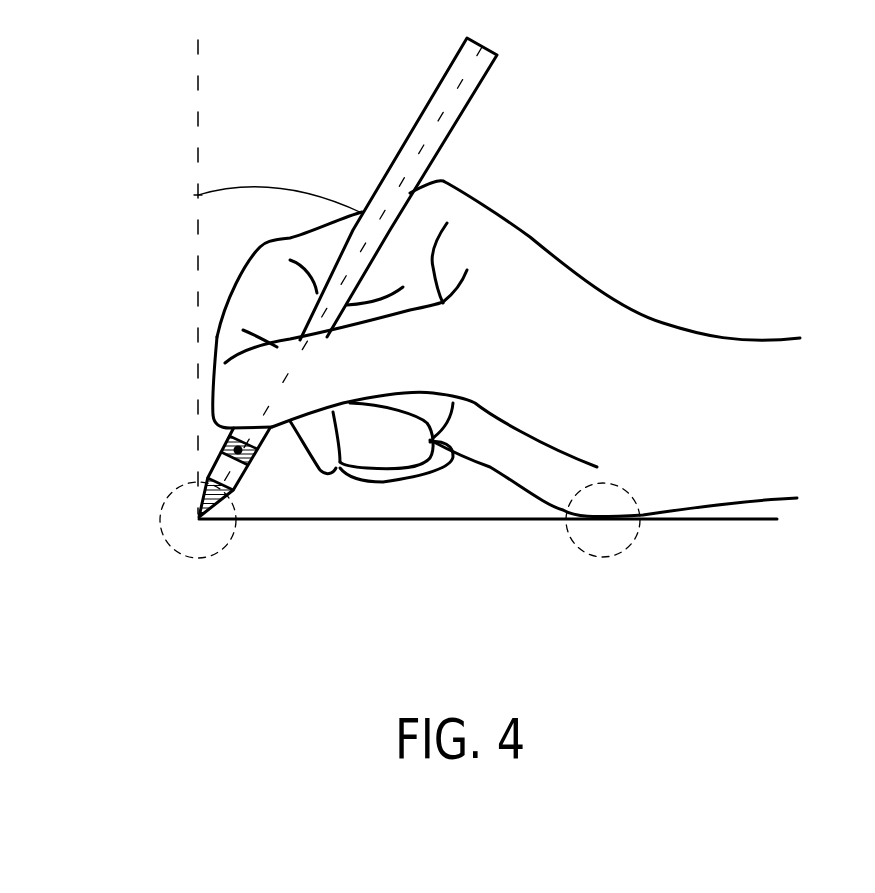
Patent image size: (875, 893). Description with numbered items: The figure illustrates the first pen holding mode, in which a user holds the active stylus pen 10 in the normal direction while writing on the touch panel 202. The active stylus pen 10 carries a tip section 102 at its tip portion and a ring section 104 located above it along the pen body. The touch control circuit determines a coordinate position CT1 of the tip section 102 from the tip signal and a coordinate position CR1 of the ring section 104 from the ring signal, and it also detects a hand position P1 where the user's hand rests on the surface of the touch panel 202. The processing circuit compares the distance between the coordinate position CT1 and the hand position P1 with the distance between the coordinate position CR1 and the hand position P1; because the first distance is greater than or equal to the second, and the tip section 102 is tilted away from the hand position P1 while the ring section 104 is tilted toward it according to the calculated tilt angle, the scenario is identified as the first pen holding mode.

The active stylus pen 10 is at (483, 80).
The tip section 102 is at (203, 496).
The ring section 104 is at (227, 441).
The touch panel 202 is at (730, 520).
The coordinate position of the tip section CT1 is at (200, 558).
The coordinate position of the ring section CR1 is at (250, 456).
The hand position P1 is at (628, 547).